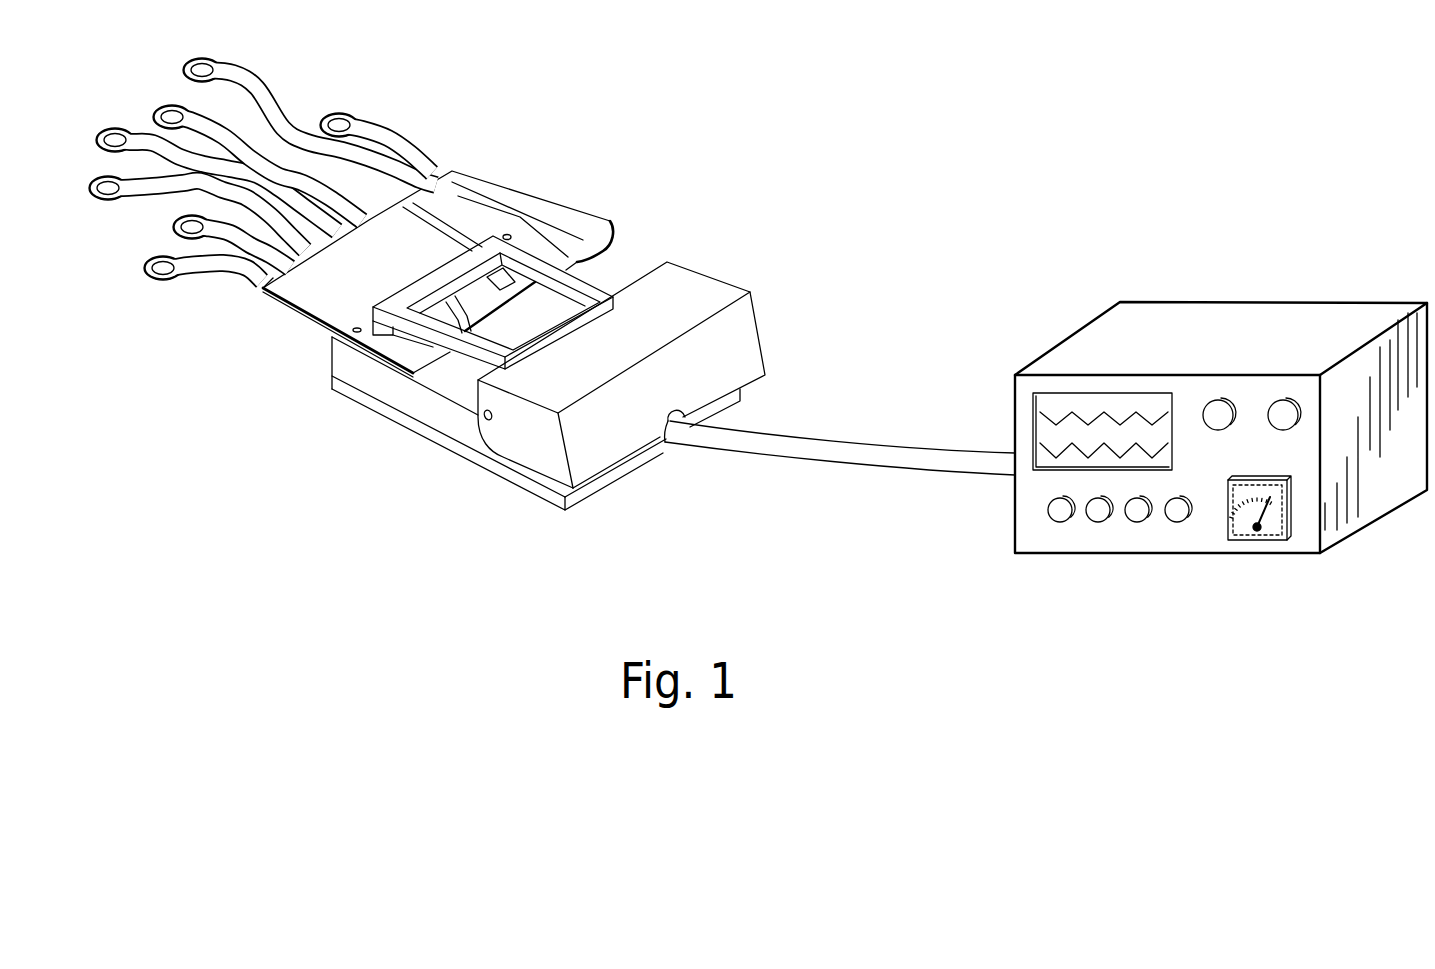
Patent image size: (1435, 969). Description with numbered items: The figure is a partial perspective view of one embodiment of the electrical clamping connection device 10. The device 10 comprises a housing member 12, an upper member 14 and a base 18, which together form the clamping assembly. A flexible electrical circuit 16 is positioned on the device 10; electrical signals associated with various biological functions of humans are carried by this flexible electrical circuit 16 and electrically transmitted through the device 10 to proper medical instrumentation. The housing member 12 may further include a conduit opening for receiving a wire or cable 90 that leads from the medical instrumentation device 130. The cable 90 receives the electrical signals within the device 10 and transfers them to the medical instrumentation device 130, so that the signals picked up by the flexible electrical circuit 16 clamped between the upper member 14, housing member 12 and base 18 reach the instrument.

The electrical clamping connection device 10 is at (473, 496).
The housing member 12 is at (376, 396).
The upper member 14 is at (690, 268).
The flexible electrical circuit 16 is at (580, 217).
The base 18 is at (587, 514).
The cable 90 is at (878, 468).
The medical instrumentation device 130 is at (1263, 310).